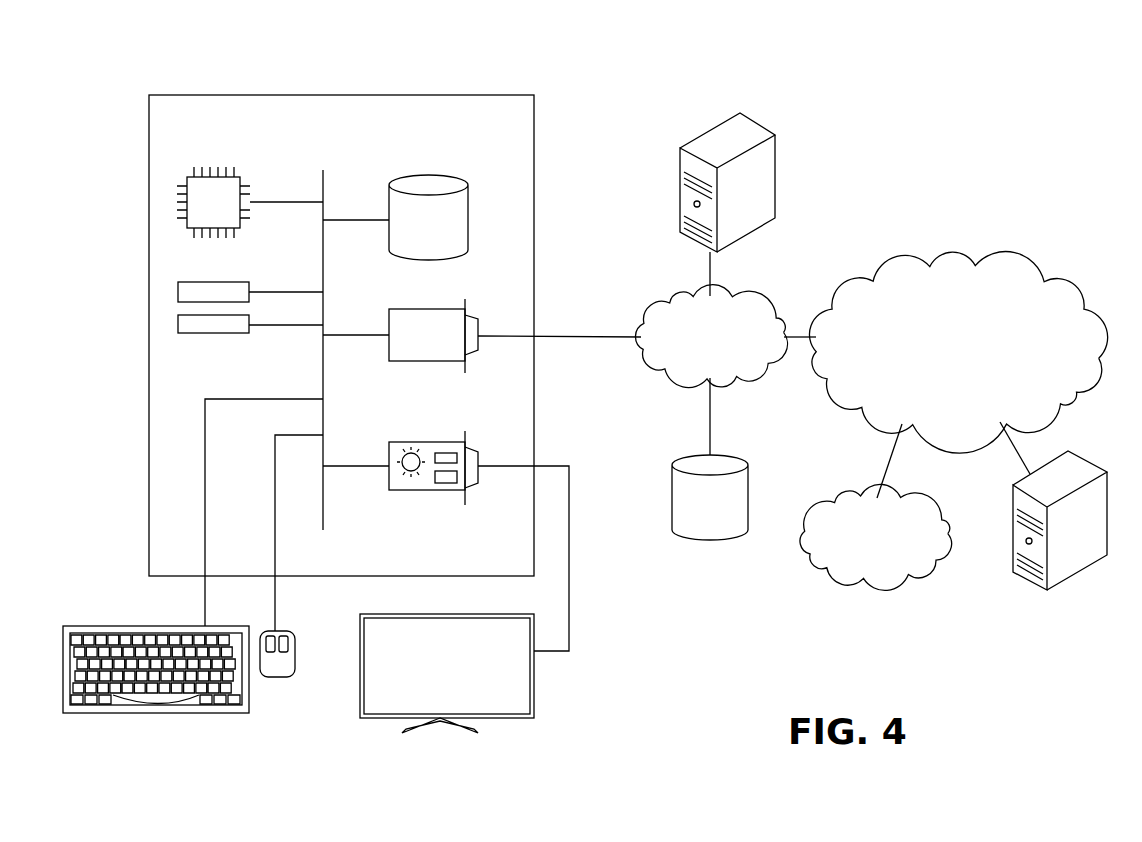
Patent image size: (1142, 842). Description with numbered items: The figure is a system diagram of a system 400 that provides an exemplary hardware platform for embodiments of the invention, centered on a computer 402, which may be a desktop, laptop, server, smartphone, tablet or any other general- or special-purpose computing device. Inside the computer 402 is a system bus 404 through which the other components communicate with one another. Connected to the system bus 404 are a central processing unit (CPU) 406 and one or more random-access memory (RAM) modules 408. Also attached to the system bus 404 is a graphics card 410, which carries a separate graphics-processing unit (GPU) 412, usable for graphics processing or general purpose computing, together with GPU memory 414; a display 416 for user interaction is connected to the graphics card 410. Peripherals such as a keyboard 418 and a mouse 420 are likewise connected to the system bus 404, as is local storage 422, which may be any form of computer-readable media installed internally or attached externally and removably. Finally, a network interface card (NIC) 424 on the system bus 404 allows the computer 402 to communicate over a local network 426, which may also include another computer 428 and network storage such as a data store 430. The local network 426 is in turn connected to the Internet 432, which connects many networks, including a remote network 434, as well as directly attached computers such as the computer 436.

The system 400 is at (214, 54).
The computer 402 is at (493, 95).
The system bus 404 is at (325, 176).
The central processing unit (CPU) 406 is at (237, 177).
The random-access memory (RAM) modules 408 is at (249, 322).
The graphics card 410 is at (460, 525).
The graphics-processing unit (GPU) 412 is at (408, 466).
The GPU memory 414 is at (445, 483).
The display 416 is at (534, 700).
The keyboard 418 is at (158, 714).
The mouse 420 is at (275, 678).
The local storage 422 is at (468, 205).
The network interface card (NIC) 424 is at (389, 322).
The local network 426 is at (758, 296).
The computer 428 is at (758, 124).
The data store 430 is at (740, 456).
The Internet 432 is at (1000, 263).
The remote network 434 is at (930, 494).
The computer 436 is at (1080, 456).